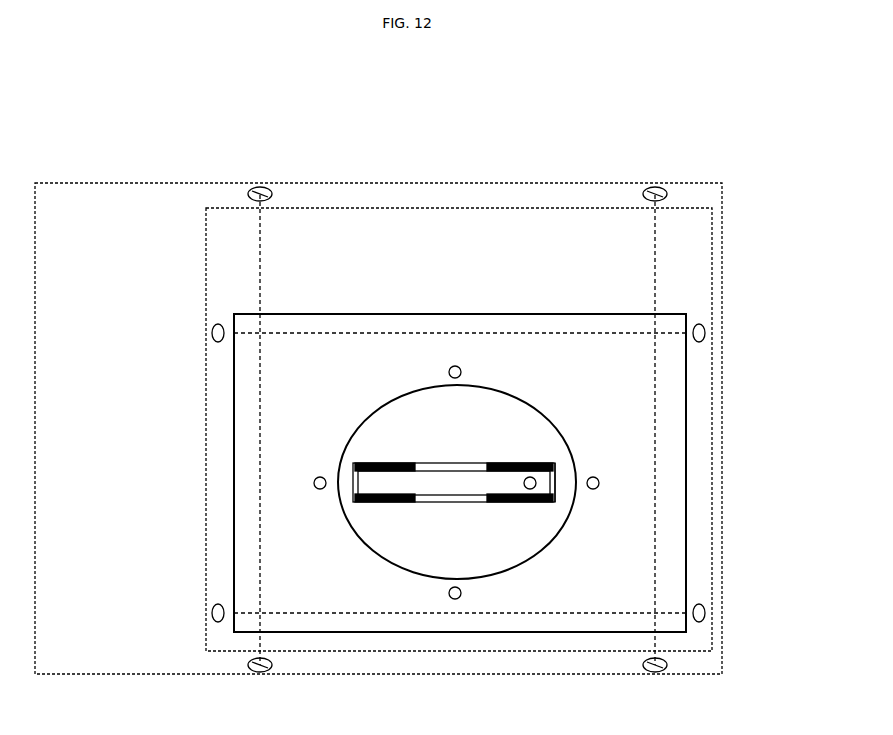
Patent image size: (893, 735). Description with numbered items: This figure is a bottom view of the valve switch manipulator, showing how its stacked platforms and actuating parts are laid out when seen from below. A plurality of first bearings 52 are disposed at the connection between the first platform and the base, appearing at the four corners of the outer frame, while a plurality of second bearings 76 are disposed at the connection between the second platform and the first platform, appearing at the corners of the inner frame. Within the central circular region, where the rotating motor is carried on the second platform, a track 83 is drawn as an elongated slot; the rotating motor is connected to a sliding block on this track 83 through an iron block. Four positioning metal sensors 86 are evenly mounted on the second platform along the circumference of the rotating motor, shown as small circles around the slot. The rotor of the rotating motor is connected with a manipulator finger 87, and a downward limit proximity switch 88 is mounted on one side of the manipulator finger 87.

The first bearings 52 is at (270, 190).
The second bearings 76 is at (213, 338).
The track 83 is at (337, 463).
The positioning metal sensors 86 is at (461, 376).
The manipulator finger 87 is at (497, 500).
The downward limit proximity switch 88 is at (556, 497).